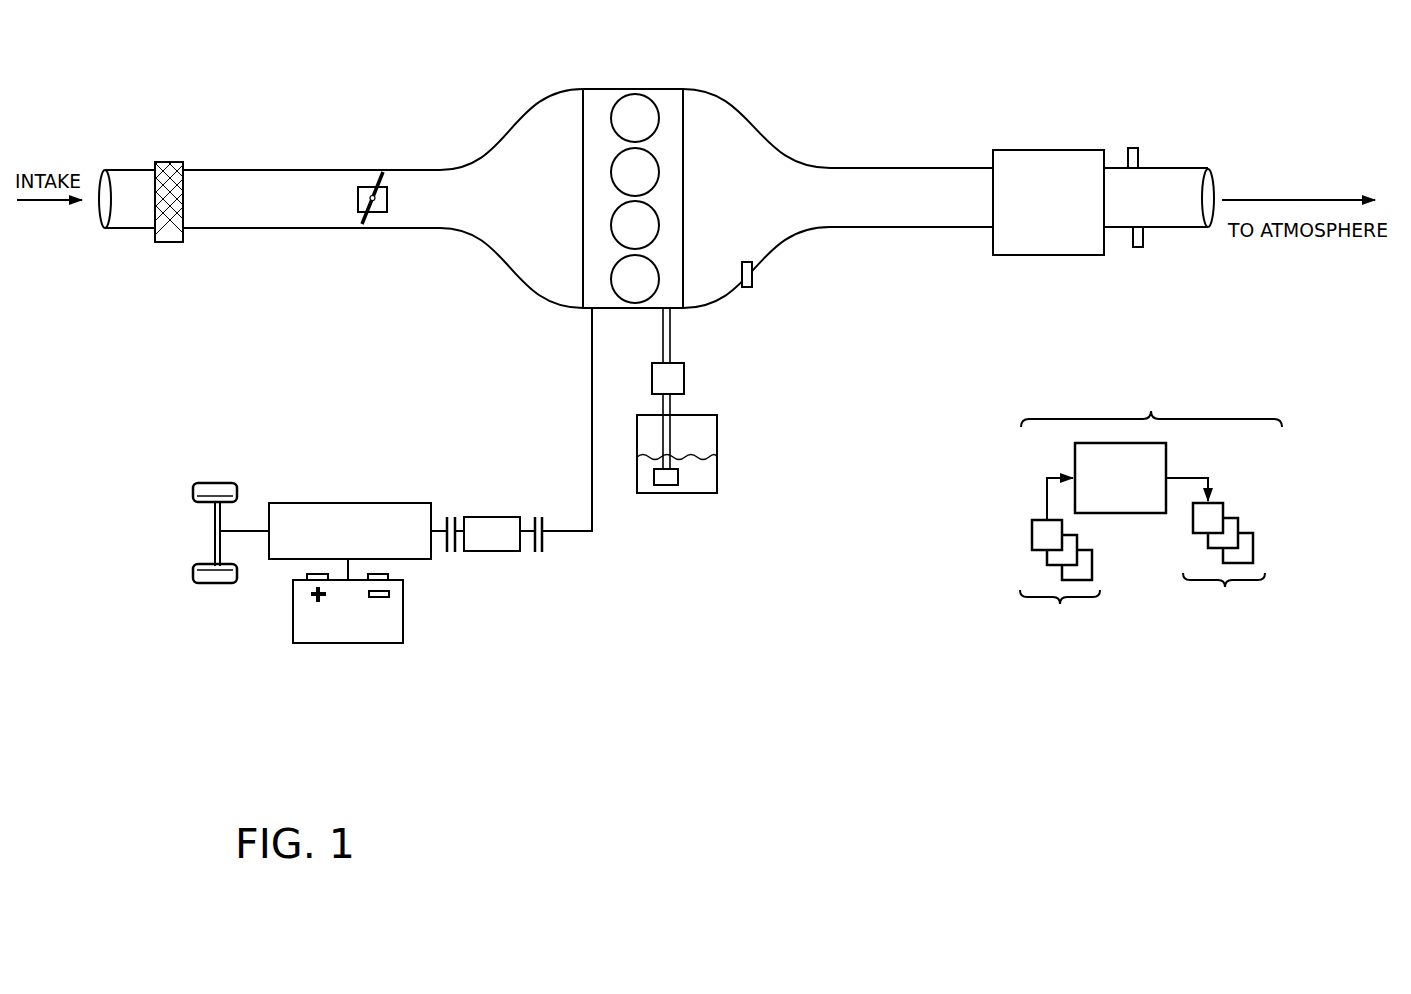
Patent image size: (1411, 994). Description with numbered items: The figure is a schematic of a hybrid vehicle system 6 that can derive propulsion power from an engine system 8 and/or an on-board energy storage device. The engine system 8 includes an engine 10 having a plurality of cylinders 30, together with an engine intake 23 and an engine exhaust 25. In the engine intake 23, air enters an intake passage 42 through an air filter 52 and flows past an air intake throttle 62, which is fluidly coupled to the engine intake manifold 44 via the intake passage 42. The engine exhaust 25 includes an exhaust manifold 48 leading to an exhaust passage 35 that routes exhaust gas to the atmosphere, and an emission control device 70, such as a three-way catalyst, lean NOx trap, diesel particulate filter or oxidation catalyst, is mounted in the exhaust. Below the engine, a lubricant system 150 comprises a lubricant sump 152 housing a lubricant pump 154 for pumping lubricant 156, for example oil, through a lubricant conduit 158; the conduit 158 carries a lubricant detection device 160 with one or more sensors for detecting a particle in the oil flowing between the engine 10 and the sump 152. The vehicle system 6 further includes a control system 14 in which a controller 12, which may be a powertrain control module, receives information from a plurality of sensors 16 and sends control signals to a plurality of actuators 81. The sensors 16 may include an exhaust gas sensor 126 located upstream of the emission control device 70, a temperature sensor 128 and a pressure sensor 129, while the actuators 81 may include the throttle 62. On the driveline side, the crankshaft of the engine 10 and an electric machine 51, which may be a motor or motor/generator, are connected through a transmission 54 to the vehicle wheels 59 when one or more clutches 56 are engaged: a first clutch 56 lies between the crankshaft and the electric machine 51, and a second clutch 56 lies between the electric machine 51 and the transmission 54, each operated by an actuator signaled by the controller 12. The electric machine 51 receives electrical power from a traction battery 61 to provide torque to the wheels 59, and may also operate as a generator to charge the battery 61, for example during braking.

The hybrid vehicle system 6 is at (120, 68).
The engine system 8 is at (1242, 64).
The engine 10 is at (651, 198).
The controller 12 is at (1120, 478).
The control system 14 is at (1151, 505).
The sensors 16 is at (1060, 560).
The engine intake 23 is at (511, 191).
The engine exhaust 25 is at (774, 197).
The cylinders 30 is at (657, 112).
The exhaust passage 35 is at (1184, 168).
The intake passage 42 is at (131, 228).
The engine intake manifold 44 is at (552, 214).
The exhaust manifold 48 is at (772, 214).
The electric machine 51 is at (494, 552).
The air filter 52 is at (170, 162).
The transmission 54 is at (293, 561).
The clutches 56 is at (543, 519).
The vehicle wheels 59 is at (212, 586).
The traction battery 61 is at (353, 645).
The air intake throttle 62 is at (387, 206).
The emission control device 70 is at (1038, 150).
The actuators 81 is at (1215, 552).
The exhaust gas sensor 126 is at (752, 268).
The temperature sensor 128 is at (1138, 247).
The pressure sensor 129 is at (1133, 148).
The lubricant system 150 is at (703, 421).
The lubricant sump 152 is at (695, 415).
The lubricant pump 154 is at (664, 485).
The lubricant 156 is at (677, 446).
The lubricant conduit 158 is at (662, 340).
The lubricant detection device 160 is at (684, 363).